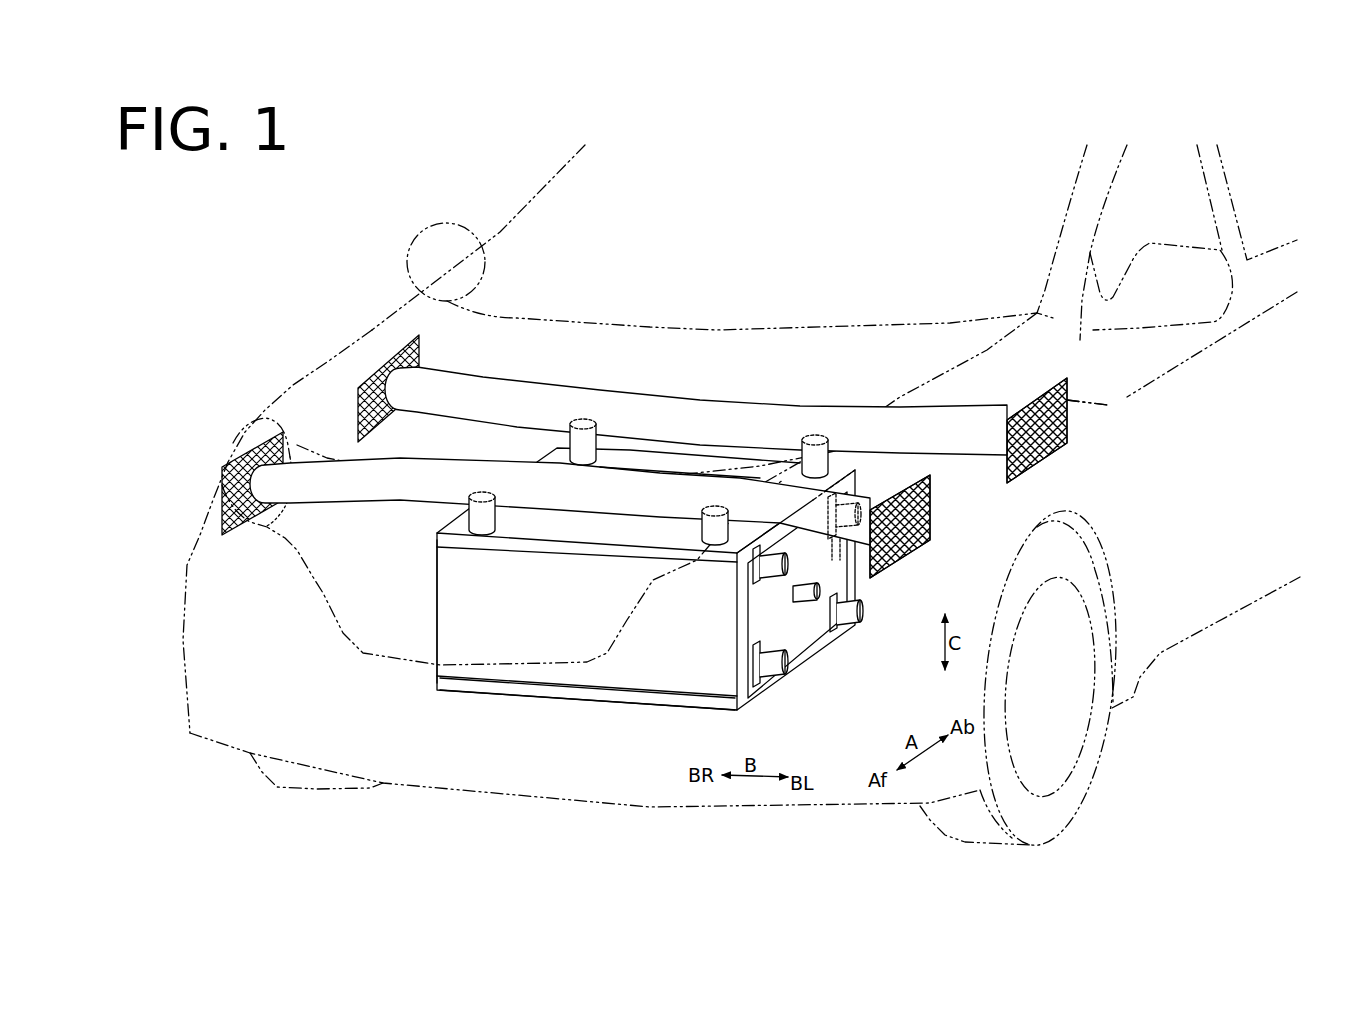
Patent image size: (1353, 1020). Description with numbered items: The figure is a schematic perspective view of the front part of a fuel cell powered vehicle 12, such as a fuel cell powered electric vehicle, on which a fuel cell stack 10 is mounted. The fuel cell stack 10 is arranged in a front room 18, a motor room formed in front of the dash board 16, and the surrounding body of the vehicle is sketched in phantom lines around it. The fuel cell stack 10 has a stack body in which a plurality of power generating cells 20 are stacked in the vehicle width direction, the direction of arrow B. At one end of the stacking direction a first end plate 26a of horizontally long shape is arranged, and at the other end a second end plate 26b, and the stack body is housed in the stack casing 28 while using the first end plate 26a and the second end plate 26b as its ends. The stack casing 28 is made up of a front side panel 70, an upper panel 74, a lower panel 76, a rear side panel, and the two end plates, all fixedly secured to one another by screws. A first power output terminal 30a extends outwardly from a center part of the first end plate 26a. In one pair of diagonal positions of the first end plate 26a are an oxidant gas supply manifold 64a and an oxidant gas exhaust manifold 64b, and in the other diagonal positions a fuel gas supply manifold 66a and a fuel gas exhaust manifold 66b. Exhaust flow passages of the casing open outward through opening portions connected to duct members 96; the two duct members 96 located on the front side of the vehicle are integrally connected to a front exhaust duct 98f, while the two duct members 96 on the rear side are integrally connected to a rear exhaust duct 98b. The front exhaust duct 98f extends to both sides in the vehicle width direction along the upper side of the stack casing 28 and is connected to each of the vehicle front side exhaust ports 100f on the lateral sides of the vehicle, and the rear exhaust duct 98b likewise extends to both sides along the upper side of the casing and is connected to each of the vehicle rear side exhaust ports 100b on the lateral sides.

The fuel cell stack 10 is at (613, 616).
The fuel cell powered vehicle 12 is at (330, 254).
The dash board 16 is at (690, 330).
The front room 18 is at (338, 375).
The power generating cells 20 is at (668, 461).
The first end plate 26a is at (805, 648).
The second end plate 26b is at (437, 595).
The stack casing 28 is at (630, 448).
The first power output terminal 30a is at (795, 598).
The oxidant gas supply manifold 64a is at (846, 532).
The oxidant gas exhaust manifold 64b is at (773, 670).
The fuel gas supply manifold 66a is at (858, 612).
The fuel gas exhaust manifold 66b is at (755, 575).
The front side panel 70 is at (577, 677).
The upper panel 74 is at (713, 461).
The lower panel 76 is at (632, 712).
The duct members 96 is at (572, 440).
The rear exhaust duct 98b is at (535, 400).
The front exhaust duct 98f is at (592, 503).
The vehicle rear side exhaust ports 100b is at (377, 392).
The vehicle front side exhaust ports 100f is at (228, 468).